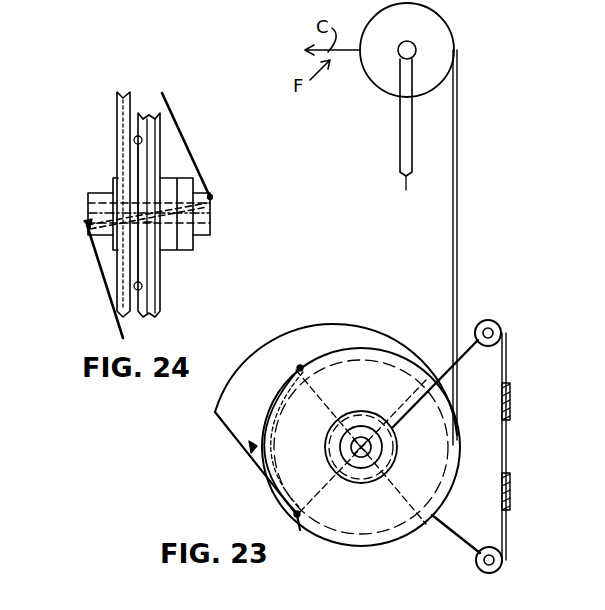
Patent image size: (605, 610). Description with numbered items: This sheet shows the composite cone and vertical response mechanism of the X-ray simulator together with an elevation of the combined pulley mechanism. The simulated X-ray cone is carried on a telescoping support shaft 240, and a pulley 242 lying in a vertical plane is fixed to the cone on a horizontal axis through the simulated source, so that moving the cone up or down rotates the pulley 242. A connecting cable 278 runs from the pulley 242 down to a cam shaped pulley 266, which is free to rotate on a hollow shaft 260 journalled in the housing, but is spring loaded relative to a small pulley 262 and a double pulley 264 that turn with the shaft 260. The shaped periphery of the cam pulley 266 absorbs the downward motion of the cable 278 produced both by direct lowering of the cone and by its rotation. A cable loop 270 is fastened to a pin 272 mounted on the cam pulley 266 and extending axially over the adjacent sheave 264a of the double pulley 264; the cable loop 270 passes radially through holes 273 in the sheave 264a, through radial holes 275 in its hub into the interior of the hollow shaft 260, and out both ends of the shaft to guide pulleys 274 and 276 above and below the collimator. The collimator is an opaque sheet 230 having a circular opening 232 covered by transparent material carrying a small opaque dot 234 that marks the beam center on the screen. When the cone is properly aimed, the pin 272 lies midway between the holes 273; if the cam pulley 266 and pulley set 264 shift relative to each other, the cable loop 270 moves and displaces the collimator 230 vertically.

In FIG. 23, the opaque sheet 230 is at (518, 499).
In FIG. 23, the circular opening 232 is at (508, 466).
In FIG. 23, the opaque dot 234 is at (508, 446).
In FIG. 23, the telescoping support shaft 240 is at (400, 150).
In FIG. 23, the pulley 242 is at (444, 30).
In FIG. 23, the hollow shaft 260 is at (361, 447).
In FIG. 23, the small pulley 262 is at (352, 347).
In FIG. 24, the double pulley 264 is at (160, 118).
In FIG. 24, the sheave 264a is at (147, 118).
In FIG. 24, the cam shaped pulley 266 is at (118, 92).
In FIG. 23, the cam shaped pulley 266 is at (310, 336).
In FIG. 24, the cable loop 270 is at (183, 135).
In FIG. 23, the cable loop 270 is at (465, 330).
In FIG. 24, the pin 272 is at (148, 222).
In FIG. 23, the pin 272 is at (253, 447).
In FIG. 24, the holes 273 is at (134, 141).
In FIG. 23, the holes 273 is at (299, 367).
In FIG. 23, the guide pulley 274 is at (500, 322).
In FIG. 23, the radial holes 275 is at (293, 440).
In FIG. 23, the guide pulley 276 is at (501, 553).
In FIG. 23, the connecting cable 278 is at (456, 203).